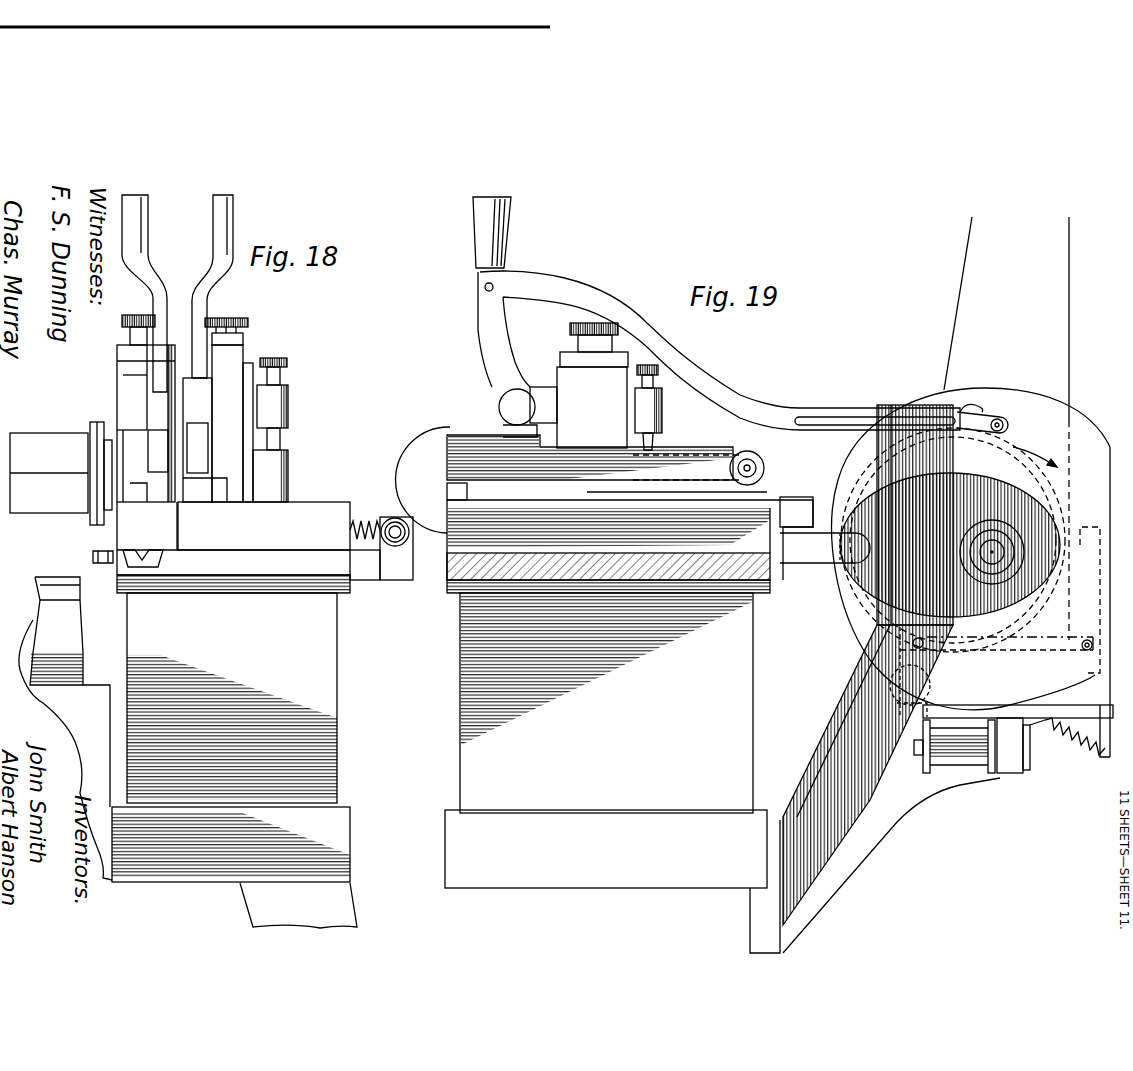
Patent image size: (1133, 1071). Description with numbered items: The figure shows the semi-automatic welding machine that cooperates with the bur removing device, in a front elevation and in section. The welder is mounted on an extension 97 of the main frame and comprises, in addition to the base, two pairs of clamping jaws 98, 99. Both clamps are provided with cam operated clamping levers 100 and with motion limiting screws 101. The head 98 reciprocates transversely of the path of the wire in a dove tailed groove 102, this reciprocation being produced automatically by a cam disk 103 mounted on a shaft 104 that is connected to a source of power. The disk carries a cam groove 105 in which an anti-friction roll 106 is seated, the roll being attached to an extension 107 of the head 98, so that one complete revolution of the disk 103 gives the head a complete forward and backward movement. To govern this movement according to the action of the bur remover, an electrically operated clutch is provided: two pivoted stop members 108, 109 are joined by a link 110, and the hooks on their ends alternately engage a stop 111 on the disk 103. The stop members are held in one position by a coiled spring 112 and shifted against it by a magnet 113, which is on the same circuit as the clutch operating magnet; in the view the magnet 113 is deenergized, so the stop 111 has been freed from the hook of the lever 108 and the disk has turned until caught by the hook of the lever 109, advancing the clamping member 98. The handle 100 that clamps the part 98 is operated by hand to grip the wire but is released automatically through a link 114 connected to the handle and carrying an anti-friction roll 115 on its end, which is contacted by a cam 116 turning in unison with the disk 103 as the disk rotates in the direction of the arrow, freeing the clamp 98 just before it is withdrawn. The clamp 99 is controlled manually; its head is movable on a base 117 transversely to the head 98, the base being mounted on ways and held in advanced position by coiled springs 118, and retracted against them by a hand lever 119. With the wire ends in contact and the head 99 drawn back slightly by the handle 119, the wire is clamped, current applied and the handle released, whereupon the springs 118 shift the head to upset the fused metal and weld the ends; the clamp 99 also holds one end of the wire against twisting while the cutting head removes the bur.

In FIG. 18, the extension 97 is at (327, 690).
In FIG. 19, the extension 97 is at (612, 766).
In FIG. 18, the clamping jaw head 98 is at (146, 423).
In FIG. 19, the clamping jaw head 98 is at (463, 450).
In FIG. 18, the clamping jaw 99 is at (218, 423).
In FIG. 18, the cam operated clamping lever 100 is at (213, 223).
In FIG. 19, the cam operated clamping lever 100 is at (512, 352).
In FIG. 18, the motion limiting screw 101 is at (134, 316).
In FIG. 19, the motion limiting screw 101 is at (598, 323).
In FIG. 18, the dove tailed groove 102 is at (120, 549).
In FIG. 19, the cam disk 103 is at (1062, 503).
In FIG. 19, the shaft 104 is at (993, 553).
In FIG. 19, the cam groove 105 is at (860, 588).
In FIG. 19, the anti-friction roll 106 is at (847, 531).
In FIG. 19, the extension of the head 107 is at (822, 567).
In FIG. 19, the pivoted stop member 108 is at (1095, 624).
In FIG. 19, the pivoted stop member 109 is at (920, 592).
In FIG. 19, the link 110 is at (1028, 648).
In FIG. 19, the stop 111 is at (991, 671).
In FIG. 19, the coiled spring 112 is at (1072, 748).
In FIG. 19, the magnet 113 is at (967, 760).
In FIG. 19, the link 114 is at (733, 403).
In FIG. 19, the anti-friction roll 115 is at (991, 420).
In FIG. 19, the cam 116 is at (1011, 447).
In FIG. 18, the base 117 is at (292, 513).
In FIG. 18, the coiled springs 118 is at (360, 518).
In FIG. 18, the hand lever 119 is at (388, 519).